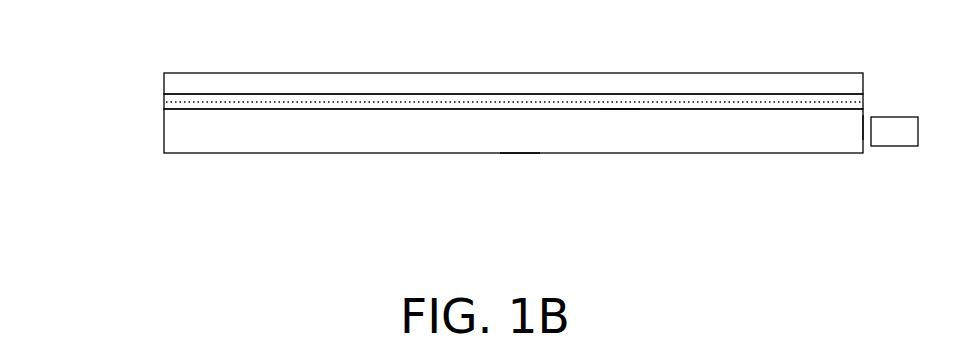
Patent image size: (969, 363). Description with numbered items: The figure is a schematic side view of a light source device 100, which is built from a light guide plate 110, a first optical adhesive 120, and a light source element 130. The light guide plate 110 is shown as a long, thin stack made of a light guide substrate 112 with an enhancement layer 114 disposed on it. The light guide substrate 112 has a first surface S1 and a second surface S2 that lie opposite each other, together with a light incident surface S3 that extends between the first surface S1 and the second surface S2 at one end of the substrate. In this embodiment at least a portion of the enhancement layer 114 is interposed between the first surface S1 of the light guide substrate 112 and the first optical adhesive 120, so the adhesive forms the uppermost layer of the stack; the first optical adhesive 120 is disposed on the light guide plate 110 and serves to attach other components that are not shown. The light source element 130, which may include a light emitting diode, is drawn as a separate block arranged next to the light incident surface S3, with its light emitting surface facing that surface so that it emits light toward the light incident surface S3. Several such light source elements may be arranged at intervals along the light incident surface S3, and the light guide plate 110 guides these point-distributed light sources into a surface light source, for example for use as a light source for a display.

The light source device 100 is at (468, 127).
The light guide plate 110 is at (440, 123).
The light guide substrate 112 is at (173, 132).
The enhancement layer 114 is at (173, 102).
The first optical adhesive 120 is at (173, 83).
The light source element 130 is at (890, 127).
The first surface S1 is at (622, 111).
The second surface S2 is at (522, 152).
The light incident surface S3 is at (862, 127).